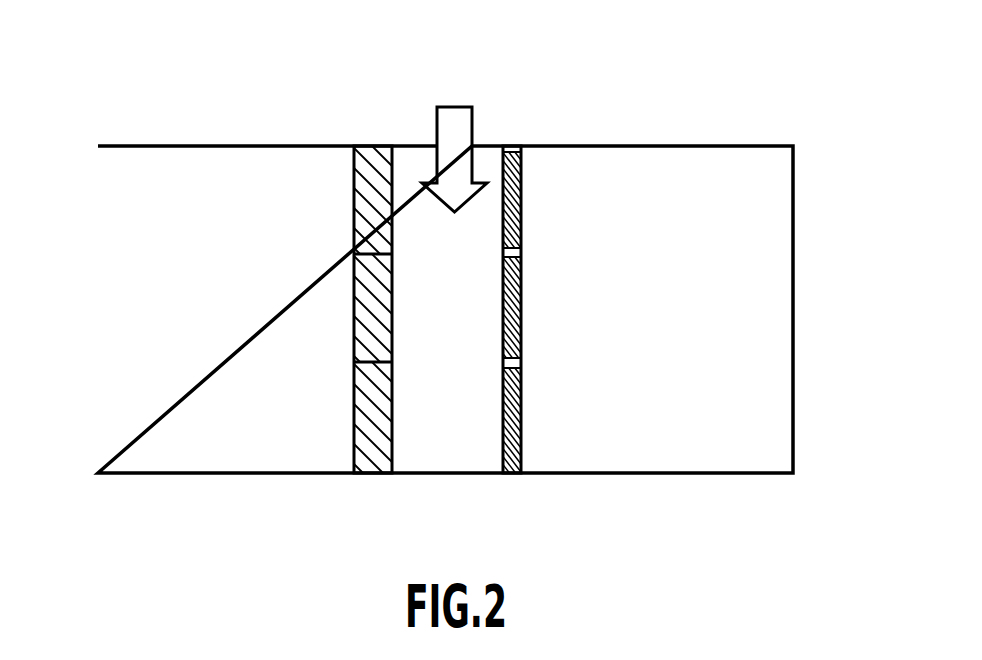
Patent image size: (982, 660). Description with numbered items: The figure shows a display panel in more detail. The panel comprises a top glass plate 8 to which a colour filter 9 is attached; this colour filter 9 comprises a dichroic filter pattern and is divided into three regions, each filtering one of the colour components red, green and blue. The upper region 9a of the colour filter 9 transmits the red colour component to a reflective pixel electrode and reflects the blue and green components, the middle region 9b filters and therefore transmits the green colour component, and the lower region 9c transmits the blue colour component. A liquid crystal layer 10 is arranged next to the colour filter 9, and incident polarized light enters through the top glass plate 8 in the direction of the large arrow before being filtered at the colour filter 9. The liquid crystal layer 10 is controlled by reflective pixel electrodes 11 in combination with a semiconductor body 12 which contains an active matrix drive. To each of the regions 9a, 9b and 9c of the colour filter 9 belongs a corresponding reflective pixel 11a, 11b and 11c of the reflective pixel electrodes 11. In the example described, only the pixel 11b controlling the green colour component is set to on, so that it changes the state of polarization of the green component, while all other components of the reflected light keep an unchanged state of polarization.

The top glass plate 8 is at (225, 366).
The colour filter 9 is at (354, 447).
The upper region of the colour filter 9a is at (354, 181).
The middle region of the colour filter 9b is at (354, 308).
The lower region of the colour filter 9c is at (354, 427).
The liquid crystal layer 10 is at (452, 106).
The reflective pixel electrodes 11 is at (540, 250).
The reflective pixel 11a is at (521, 178).
The reflective pixel 11b is at (521, 307).
The reflective pixel 11c is at (521, 425).
The semiconductor body 12 is at (737, 358).